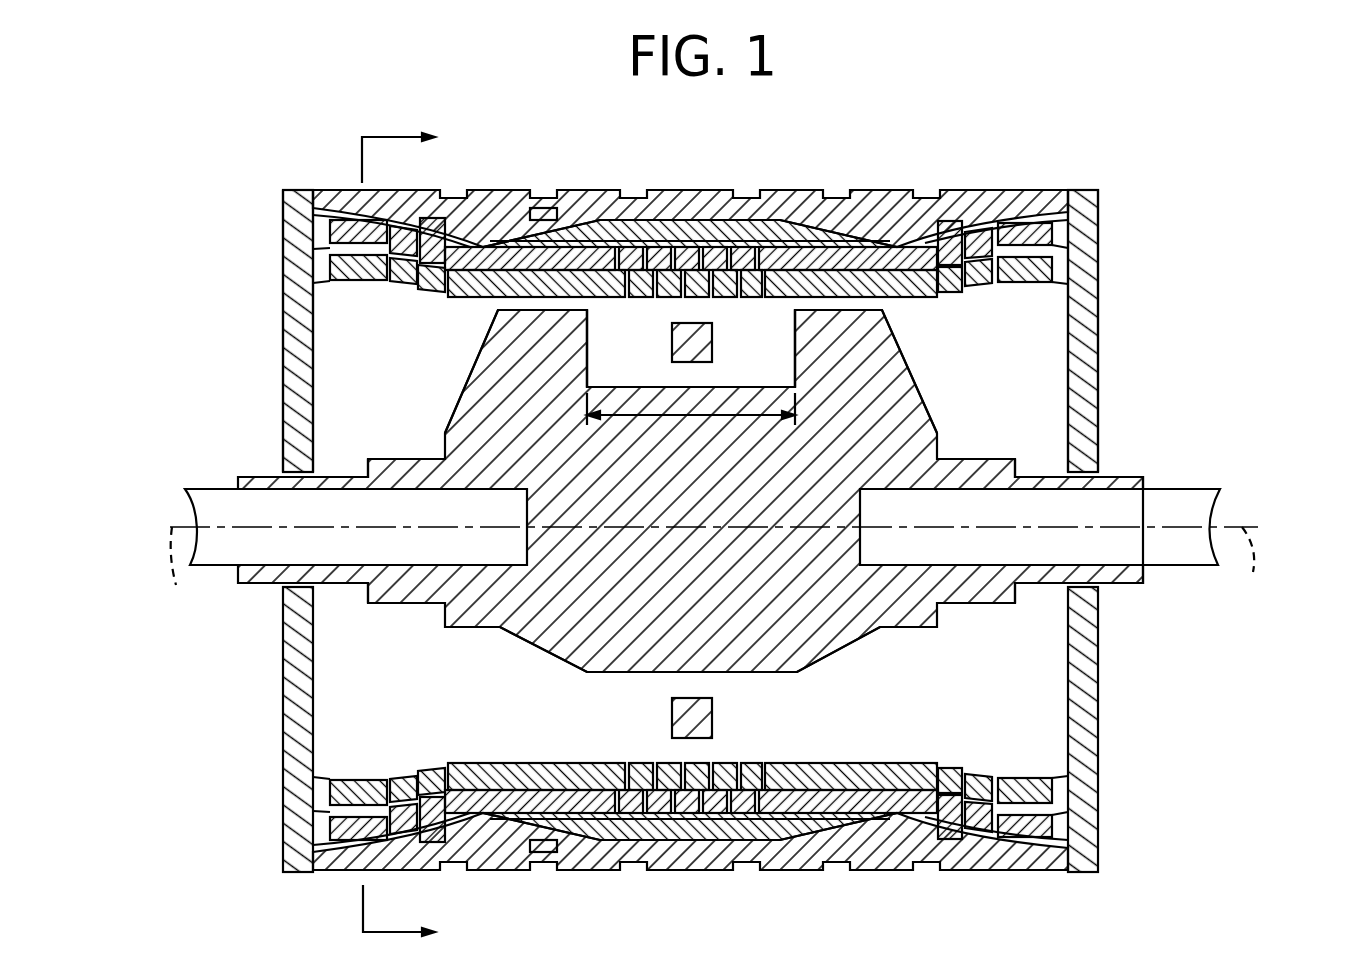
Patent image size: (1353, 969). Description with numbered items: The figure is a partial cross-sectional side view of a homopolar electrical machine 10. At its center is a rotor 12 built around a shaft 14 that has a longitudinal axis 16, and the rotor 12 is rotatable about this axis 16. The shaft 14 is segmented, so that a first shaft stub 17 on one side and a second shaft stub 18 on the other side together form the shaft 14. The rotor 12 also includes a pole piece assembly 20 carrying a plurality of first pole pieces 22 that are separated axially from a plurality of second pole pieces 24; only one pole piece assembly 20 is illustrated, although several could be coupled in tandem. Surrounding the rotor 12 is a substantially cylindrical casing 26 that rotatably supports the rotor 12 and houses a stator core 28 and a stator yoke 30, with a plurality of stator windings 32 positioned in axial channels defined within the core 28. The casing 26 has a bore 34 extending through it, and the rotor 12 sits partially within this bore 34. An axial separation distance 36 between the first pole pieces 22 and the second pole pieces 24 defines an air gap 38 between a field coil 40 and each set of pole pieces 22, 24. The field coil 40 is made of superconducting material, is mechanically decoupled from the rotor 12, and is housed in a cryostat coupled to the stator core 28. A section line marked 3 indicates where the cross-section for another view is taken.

The section line 3- 3 is at (414, 533).
The homopolar electrical machine 10 is at (268, 177).
The rotor 12 is at (905, 640).
The shaft 14 is at (208, 567).
The longitudinal axis 16 is at (178, 548).
The first shaft stub 17 is at (210, 500).
The second shaft stub 18 is at (1178, 510).
The pole piece assembly 20 is at (550, 637).
The first pole pieces 22 is at (490, 362).
The second pole pieces 24 is at (890, 356).
The casing 26 is at (1090, 835).
The stator core 28 is at (872, 205).
The stator yoke 30 is at (762, 832).
The stator windings 32 is at (1052, 262).
The bore 34 is at (1042, 370).
The axial separation distance 36 is at (657, 418).
The air gap 38 is at (742, 340).
The field coil 40 is at (712, 352).